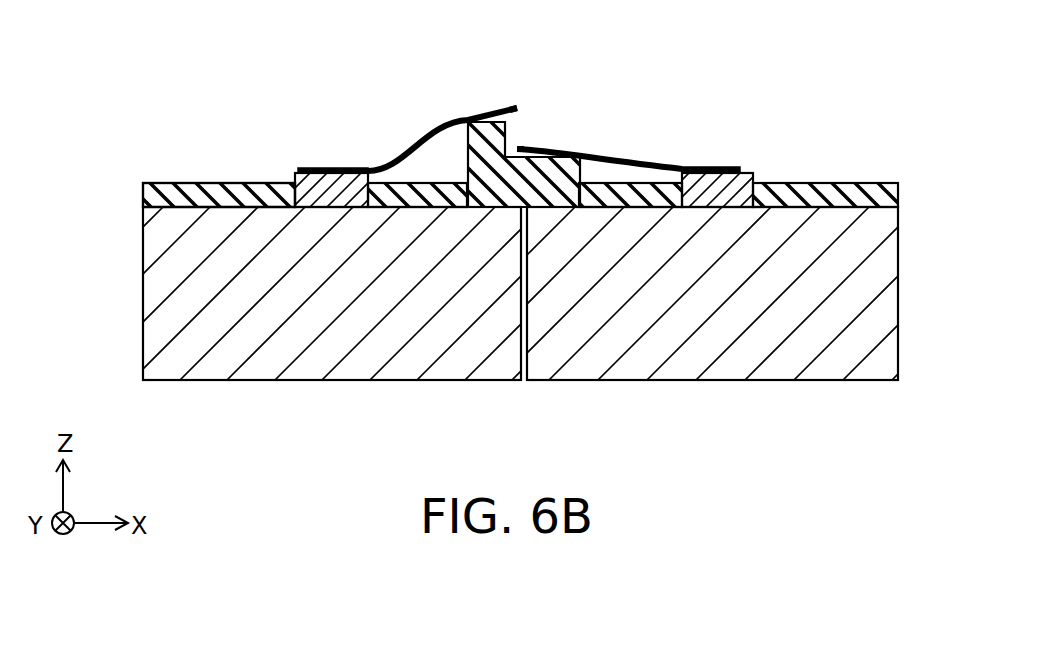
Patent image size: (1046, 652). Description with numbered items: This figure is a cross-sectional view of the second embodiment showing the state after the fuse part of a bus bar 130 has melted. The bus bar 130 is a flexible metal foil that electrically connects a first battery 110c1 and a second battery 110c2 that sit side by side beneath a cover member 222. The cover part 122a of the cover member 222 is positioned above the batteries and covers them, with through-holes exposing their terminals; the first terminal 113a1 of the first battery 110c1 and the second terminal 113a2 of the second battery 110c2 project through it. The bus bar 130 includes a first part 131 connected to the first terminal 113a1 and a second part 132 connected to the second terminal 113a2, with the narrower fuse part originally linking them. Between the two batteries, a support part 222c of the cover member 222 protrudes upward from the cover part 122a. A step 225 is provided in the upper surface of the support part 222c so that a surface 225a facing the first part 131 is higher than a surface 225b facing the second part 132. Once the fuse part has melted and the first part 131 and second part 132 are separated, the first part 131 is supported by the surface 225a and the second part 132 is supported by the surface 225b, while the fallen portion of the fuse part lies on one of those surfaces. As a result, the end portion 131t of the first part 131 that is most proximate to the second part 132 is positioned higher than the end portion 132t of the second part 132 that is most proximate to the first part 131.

The cover member 222 is at (141, 192).
The support part 222c is at (490, 158).
The cover part 122a is at (171, 193).
The first part 131 is at (326, 183).
The first terminal 113a1 is at (324, 168).
The end portion of the first part 131t is at (514, 107).
The step 225 is at (519, 248).
The surface facing the first part 225a is at (505, 118).
The surface facing the second part 225b is at (565, 153).
The end portion of the second part 132t is at (527, 147).
The second part 132 is at (710, 172).
The bus bar 130 is at (747, 131).
The second terminal 113a2 is at (737, 177).
The first battery 110c1 is at (181, 384).
The second battery 110c2 is at (859, 384).